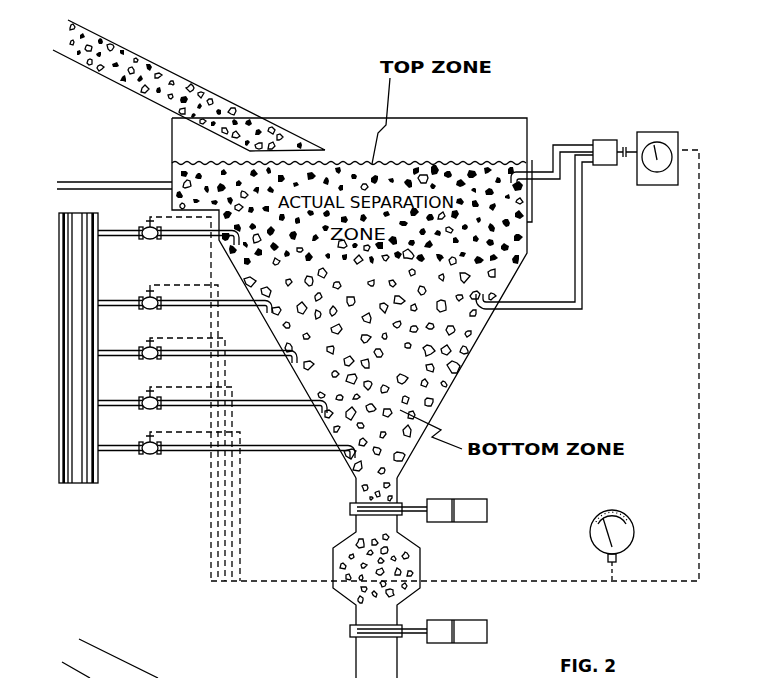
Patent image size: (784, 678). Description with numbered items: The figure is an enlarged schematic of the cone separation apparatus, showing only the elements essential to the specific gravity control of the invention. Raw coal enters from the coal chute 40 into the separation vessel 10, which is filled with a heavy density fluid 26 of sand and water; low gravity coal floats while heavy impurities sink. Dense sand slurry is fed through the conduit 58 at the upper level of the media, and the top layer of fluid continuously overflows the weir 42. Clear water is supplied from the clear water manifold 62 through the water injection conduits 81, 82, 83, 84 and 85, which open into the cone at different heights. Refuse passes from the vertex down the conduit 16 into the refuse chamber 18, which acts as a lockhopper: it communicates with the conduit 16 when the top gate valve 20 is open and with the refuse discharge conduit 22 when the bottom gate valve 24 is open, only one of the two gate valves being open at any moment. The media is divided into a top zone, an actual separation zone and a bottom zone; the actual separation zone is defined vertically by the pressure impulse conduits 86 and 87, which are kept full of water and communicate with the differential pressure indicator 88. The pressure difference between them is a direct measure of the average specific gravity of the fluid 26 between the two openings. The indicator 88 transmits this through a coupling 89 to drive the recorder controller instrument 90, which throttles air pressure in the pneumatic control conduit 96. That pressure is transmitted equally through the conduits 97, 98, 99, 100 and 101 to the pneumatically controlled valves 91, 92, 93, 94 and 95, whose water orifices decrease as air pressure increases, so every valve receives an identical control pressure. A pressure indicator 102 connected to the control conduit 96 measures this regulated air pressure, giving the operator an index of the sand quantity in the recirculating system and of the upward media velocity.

The separation vessel 10 is at (457, 375).
The conduit 16 is at (356, 488).
The refuse chamber 18 is at (421, 559).
The top gate valve 20 is at (487, 511).
The refuse discharge conduit 22 is at (398, 655).
The bottom gate valve 24 is at (487, 636).
The heavy density fluid 26 is at (350, 319).
The coal chute 40 is at (212, 101).
The weir 42 is at (533, 160).
The conduit 58 is at (135, 181).
The clear water manifold 62 is at (60, 306).
The water injection conduit 81 is at (130, 237).
The water injection conduit 82 is at (130, 307).
The water injection conduit 83 is at (130, 357).
The water injection conduit 84 is at (130, 407).
The water injection conduit 85 is at (130, 452).
The pressure impulse conduit 86 is at (548, 180).
The pressure impulse conduit 87 is at (530, 309).
The differential pressure indicator 88 is at (606, 140).
The coupling 89 is at (621, 160).
The recorder controller instrument 90 is at (652, 132).
The pneumatically controlled valve 91 is at (163, 241).
The pneumatically controlled valve 92 is at (167, 311).
The pneumatically controlled valve 93 is at (167, 361).
The pneumatically controlled valve 94 is at (167, 407).
The pneumatically controlled valve 95 is at (167, 452).
The pneumatic control conduit 96 is at (699, 266).
The conduit 97 is at (242, 507).
The conduit 98 is at (234, 533).
The conduit 99 is at (227, 563).
The conduit 100 is at (217, 526).
The conduit 101 is at (210, 560).
The pressure indicator 102 is at (613, 509).